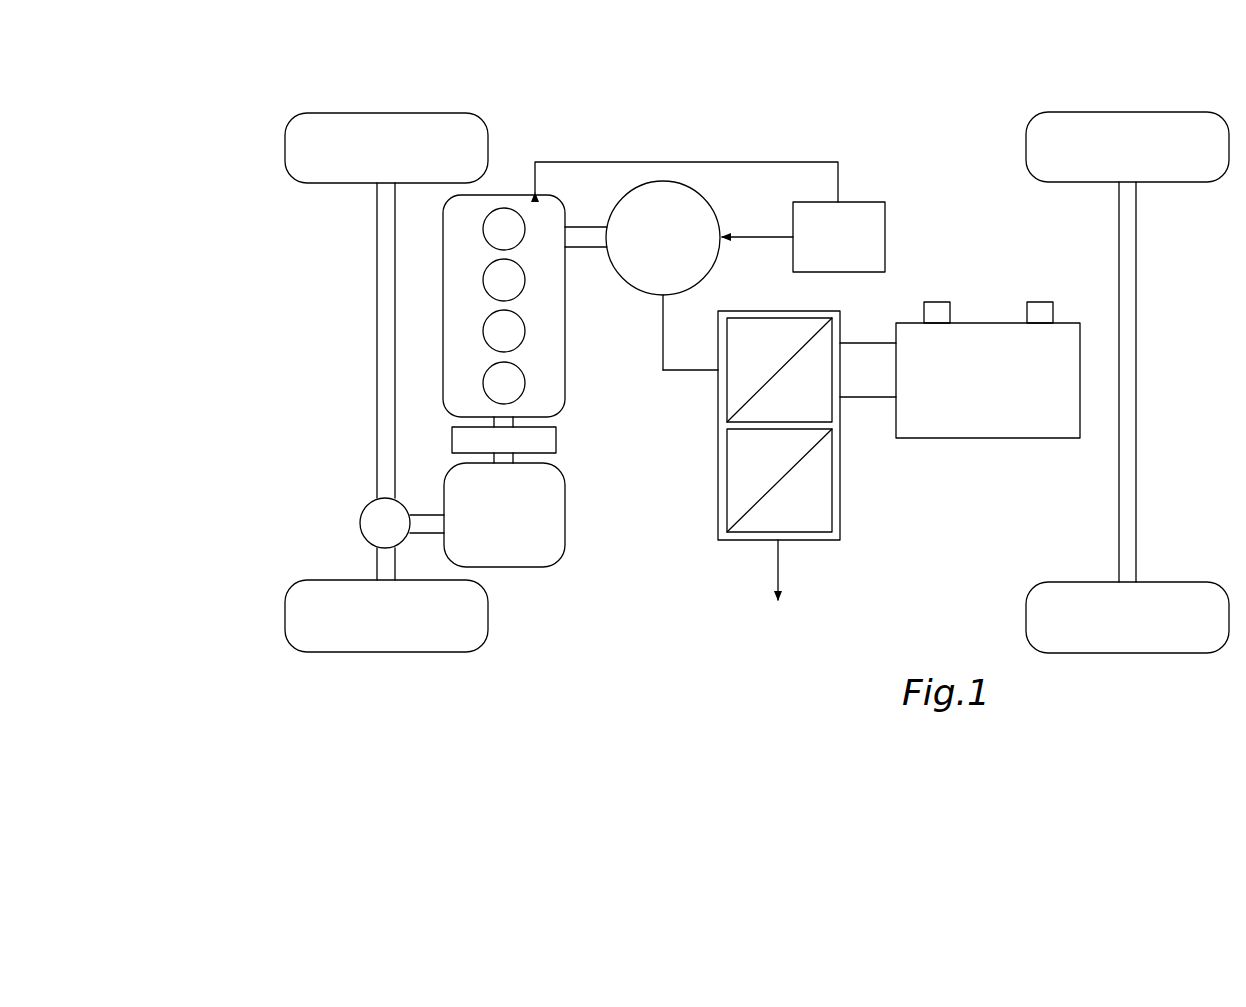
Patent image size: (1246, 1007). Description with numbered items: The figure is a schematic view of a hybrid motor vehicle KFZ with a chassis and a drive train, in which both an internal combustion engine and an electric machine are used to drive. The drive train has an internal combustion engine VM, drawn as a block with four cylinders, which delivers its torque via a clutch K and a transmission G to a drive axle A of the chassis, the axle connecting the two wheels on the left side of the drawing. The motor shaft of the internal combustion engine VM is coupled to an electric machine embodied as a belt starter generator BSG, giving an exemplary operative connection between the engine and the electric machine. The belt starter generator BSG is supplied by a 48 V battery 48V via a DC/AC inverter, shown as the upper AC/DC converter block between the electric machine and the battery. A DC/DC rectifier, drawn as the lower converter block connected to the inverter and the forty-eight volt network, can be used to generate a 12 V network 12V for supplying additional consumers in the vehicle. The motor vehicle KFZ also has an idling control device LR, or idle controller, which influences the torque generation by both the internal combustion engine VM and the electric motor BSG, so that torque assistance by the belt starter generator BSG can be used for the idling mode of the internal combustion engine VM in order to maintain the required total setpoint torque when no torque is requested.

The motor vehicle KFZ is at (238, 110).
The drive axle A is at (380, 343).
The internal combustion engine VM is at (565, 320).
The clutch K is at (556, 437).
The transmission G is at (565, 515).
The belt starter generator BSG is at (686, 266).
The idling control device LR is at (803, 237).
The 48 V battery 48V is at (899, 421).
The 12 V network 12V is at (779, 589).